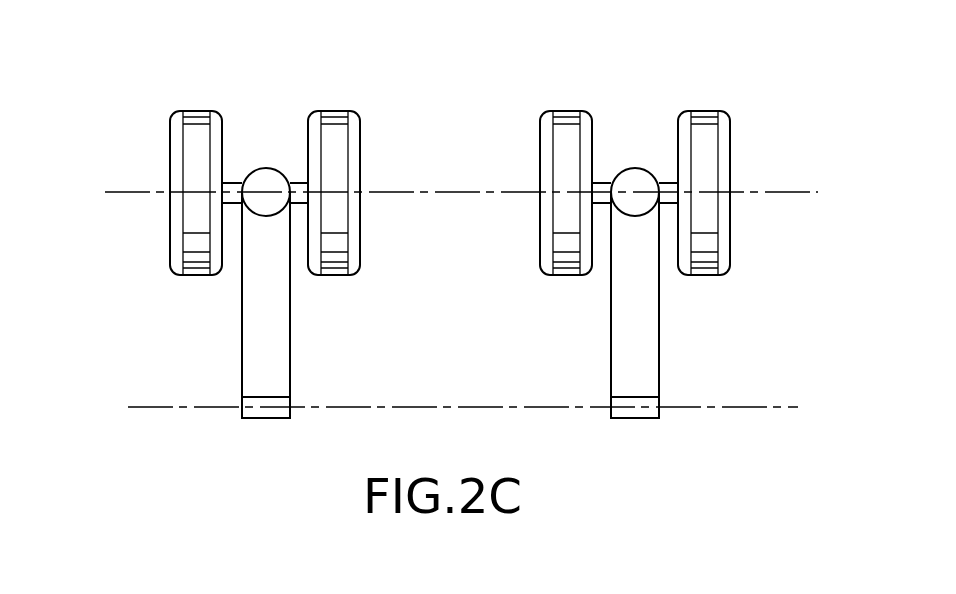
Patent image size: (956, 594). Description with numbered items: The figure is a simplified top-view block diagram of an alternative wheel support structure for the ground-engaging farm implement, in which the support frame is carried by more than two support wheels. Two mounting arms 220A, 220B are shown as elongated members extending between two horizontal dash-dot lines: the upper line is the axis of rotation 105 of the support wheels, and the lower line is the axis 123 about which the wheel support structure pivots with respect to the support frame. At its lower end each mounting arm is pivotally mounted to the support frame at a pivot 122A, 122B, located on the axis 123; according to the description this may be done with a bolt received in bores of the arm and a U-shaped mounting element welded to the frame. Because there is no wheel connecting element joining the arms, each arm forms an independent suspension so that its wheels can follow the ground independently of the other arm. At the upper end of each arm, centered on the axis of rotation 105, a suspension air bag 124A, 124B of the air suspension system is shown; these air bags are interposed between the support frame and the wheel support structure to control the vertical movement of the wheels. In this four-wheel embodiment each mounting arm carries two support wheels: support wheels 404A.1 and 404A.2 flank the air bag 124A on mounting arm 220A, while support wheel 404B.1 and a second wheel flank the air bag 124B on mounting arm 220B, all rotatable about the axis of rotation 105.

The support wheel 404B.1 is at (192, 150).
The support wheel 404A.2 is at (338, 150).
The support wheel 404A.1 is at (708, 150).
The suspension air bag 124B is at (265, 178).
The suspension air bag 124A is at (637, 178).
The mounting arm 220B is at (252, 333).
The mounting arm 220A is at (645, 333).
The pivot 122B is at (267, 412).
The pivot 122A is at (637, 412).
The axis of rotation 105 is at (802, 193).
The axis 123 is at (773, 407).